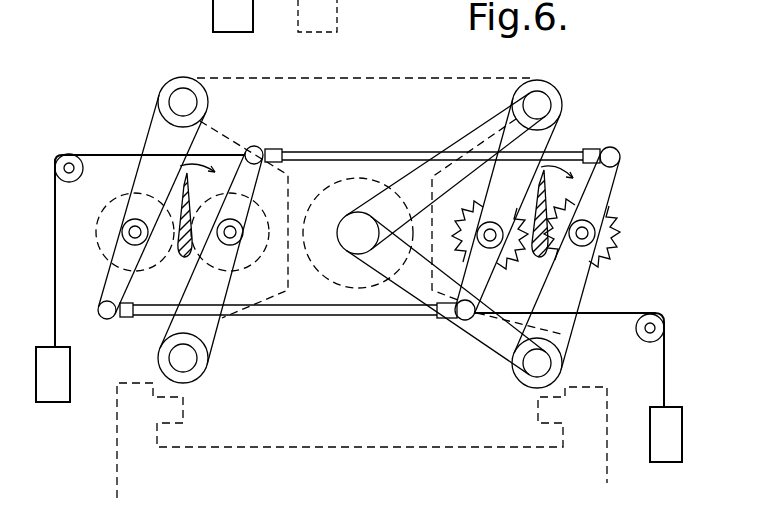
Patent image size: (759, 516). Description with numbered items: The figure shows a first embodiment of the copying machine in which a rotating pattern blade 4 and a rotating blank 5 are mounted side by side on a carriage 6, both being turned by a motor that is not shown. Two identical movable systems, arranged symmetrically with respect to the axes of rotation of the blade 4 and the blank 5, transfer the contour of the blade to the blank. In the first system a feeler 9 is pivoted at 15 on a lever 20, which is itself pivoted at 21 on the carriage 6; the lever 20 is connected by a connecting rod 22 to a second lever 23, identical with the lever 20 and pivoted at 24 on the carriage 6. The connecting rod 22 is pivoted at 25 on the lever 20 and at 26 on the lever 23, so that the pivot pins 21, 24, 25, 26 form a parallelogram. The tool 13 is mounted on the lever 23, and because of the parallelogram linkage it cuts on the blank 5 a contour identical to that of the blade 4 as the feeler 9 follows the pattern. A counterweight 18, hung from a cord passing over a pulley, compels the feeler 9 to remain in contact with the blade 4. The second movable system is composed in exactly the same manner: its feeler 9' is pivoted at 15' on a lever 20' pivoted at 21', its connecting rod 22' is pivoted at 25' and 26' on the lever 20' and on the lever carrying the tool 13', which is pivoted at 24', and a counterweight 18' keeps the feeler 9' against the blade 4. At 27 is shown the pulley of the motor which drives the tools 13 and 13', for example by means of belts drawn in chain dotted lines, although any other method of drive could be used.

The pattern blade 4 is at (191, 196).
The blank 5 is at (553, 190).
The carriage 6 is at (222, 447).
The feeler 9 is at (234, 233).
The feeler 9' is at (116, 232).
The tool 13 is at (602, 233).
The tool 13' is at (490, 222).
The pivot 15 is at (252, 213).
The pivot 15' is at (120, 209).
The counterweight 18 is at (140, 296).
The counterweight 18' is at (578, 405).
The lever 20 is at (214, 257).
The lever 20' is at (133, 204).
The pivot 21 is at (213, 358).
The pivot 21' is at (183, 87).
The connecting rod 22 is at (432, 137).
The connecting rod 22' is at (285, 328).
The second lever 23 is at (603, 181).
The pivot 24 is at (518, 367).
The pivot 24' is at (547, 94).
The pivot 25 is at (266, 139).
The pivot 25' is at (112, 328).
The pivot 26 is at (619, 149).
The pivot 26' is at (452, 329).
The motor pulley 27 is at (346, 240).